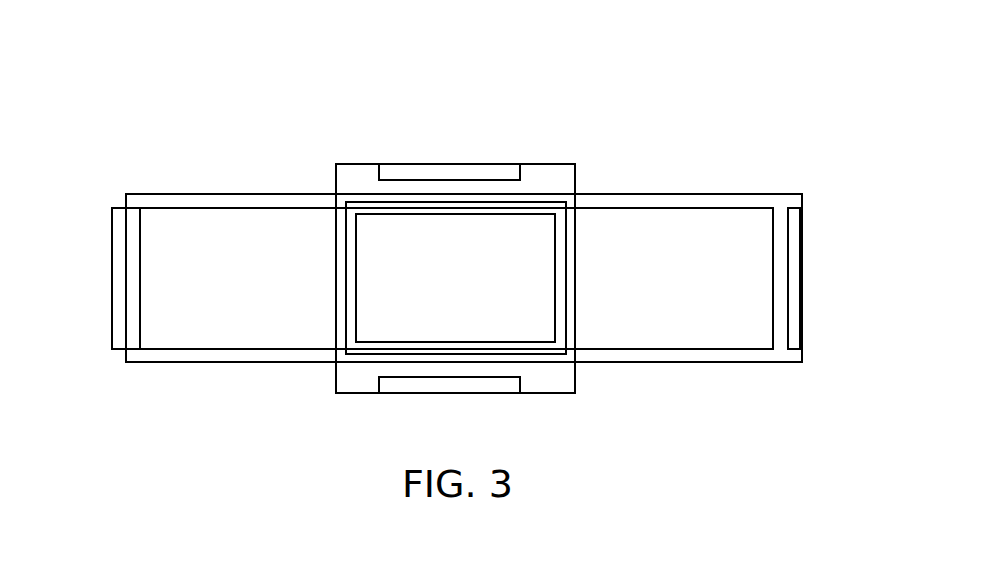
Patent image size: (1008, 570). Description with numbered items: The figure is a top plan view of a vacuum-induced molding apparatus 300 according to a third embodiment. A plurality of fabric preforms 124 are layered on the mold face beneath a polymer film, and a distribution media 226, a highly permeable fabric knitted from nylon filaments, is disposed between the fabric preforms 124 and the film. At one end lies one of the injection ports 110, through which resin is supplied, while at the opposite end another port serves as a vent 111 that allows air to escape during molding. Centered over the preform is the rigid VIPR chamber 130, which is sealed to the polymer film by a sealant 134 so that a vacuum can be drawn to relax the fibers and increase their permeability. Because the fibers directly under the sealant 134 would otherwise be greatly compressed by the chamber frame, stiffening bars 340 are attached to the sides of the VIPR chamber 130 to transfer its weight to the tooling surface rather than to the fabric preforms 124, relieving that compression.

The molding apparatus 300 is at (603, 95).
The fabric preforms 124 is at (655, 193).
The distribution media 226 is at (221, 218).
The injection ports 110 is at (130, 275).
The vent 111 is at (798, 276).
The VIPR chamber 130 is at (357, 393).
The stiffening bars 340 is at (432, 172).
The sealant 134 is at (352, 307).